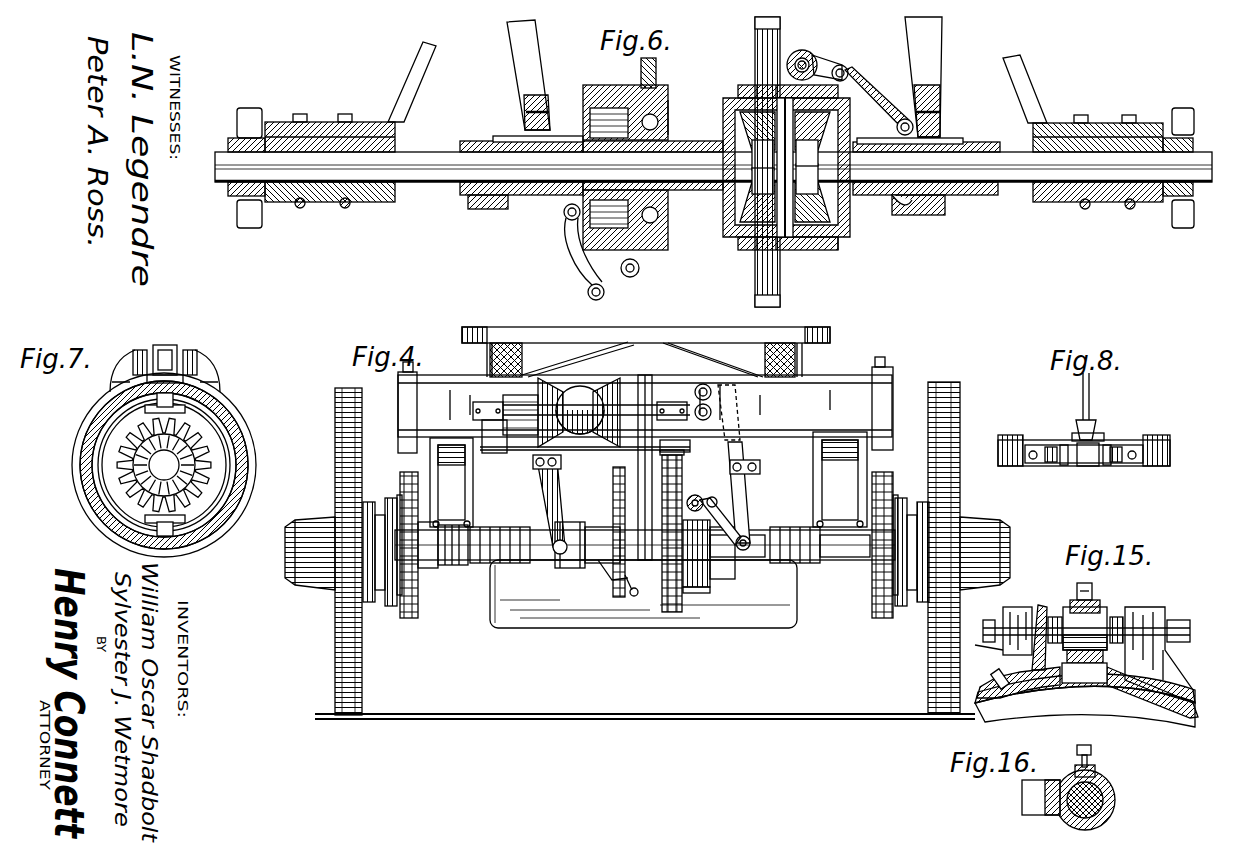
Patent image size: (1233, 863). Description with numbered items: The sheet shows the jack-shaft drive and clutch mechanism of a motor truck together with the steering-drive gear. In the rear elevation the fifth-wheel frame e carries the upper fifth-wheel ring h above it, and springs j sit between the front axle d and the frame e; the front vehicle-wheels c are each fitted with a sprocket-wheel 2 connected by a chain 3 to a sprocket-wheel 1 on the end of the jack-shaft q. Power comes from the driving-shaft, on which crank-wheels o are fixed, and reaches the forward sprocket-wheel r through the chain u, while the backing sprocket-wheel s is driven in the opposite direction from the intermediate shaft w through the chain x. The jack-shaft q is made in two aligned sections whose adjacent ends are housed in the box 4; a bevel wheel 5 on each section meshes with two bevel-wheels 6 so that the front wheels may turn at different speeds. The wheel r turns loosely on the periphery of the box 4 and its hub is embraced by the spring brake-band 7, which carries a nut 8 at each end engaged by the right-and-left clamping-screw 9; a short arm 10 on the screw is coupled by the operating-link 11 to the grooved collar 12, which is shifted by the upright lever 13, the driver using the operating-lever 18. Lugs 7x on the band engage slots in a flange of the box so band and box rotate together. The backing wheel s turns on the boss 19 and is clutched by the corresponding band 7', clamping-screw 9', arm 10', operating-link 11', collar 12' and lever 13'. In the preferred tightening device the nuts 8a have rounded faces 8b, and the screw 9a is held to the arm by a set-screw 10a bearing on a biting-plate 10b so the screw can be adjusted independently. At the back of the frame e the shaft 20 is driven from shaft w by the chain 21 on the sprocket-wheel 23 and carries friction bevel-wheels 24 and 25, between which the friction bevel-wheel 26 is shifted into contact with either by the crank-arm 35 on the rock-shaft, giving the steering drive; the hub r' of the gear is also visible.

In FIG. 6, the sprocket-wheel 1 is at (247, 108).
In FIG. 4, the sprocket-wheel 2 is at (398, 500).
In FIG. 4, the chain 3 is at (408, 476).
In FIG. 6, the box 4 is at (730, 133).
In FIG. 7, the box 4 is at (238, 440).
In FIG. 4, the box 4 is at (705, 566).
In FIG. 6, the miter or bevel wheel 5 is at (785, 167).
In FIG. 7, the miter or bevel wheel 5 is at (120, 460).
In FIG. 6, the bevel-wheel 6 is at (785, 167).
In FIG. 7, the bevel-wheel 6 is at (205, 412).
In FIG. 6, the spring brake-band 7 is at (778, 170).
In FIG. 7, the spring brake-band 7 is at (164, 465).
In FIG. 4, the spring brake-band 7 is at (696, 598).
In FIG. 15, the spring brake-band 7 is at (1096, 692).
In FIG. 6, the band 7' is at (653, 153).
In FIG. 6, the lug 7x is at (840, 249).
In FIG. 8, the lug 7x is at (1012, 437).
In FIG. 6, the nut 8 is at (808, 58).
In FIG. 7, the nut 8 is at (144, 352).
In FIG. 4, the nut 8 is at (695, 497).
In FIG. 8, the nut 8 is at (1052, 466).
In FIG. 15, the nut 8a is at (1018, 607).
In FIG. 15, the rounded face 8b is at (1045, 606).
In FIG. 6, the right-and-left clamping-screw 9 is at (830, 58).
In FIG. 7, the right-and-left clamping-screw 9 is at (168, 352).
In FIG. 4, the right-and-left clamping-screw 9 is at (713, 495).
In FIG. 8, the right-and-left clamping-screw 9 is at (1085, 472).
In FIG. 6, the clamping-screw 9' is at (642, 278).
In FIG. 15, the clamping-screw 9a is at (1115, 615).
In FIG. 16, the clamping-screw 9a is at (1118, 795).
In FIG. 6, the short arm 10 is at (856, 62).
In FIG. 8, the short arm 10 is at (1098, 443).
In FIG. 15, the short arm 10 is at (1084, 667).
In FIG. 16, the short arm 10 is at (1039, 809).
In FIG. 6, the arm 10' is at (610, 295).
In FIG. 15, the set-screw 10a is at (1085, 583).
In FIG. 16, the set-screw 10a is at (1078, 755).
In FIG. 16, the biting-plate 10b is at (1106, 778).
In FIG. 6, the operating-link 11 is at (879, 101).
In FIG. 4, the operating-link 11 is at (738, 524).
In FIG. 8, the operating-link 11 is at (1094, 406).
In FIG. 6, the operating-link 11' is at (568, 244).
In FIG. 6, the circumferentially-grooved collar 12 is at (926, 187).
In FIG. 4, the circumferentially-grooved collar 12 is at (734, 557).
In FIG. 6, the splined collar 12' is at (521, 185).
In FIG. 6, the upright lever 13 is at (725, 77).
In FIG. 4, the upright lever 13 is at (749, 492).
In FIG. 4, the upright lever 13' is at (538, 504).
In FIG. 15, the operating-lever 18 is at (1085, 625).
In FIG. 6, the boss 19 is at (669, 115).
In FIG. 4, the shaft 20 is at (598, 403).
In FIG. 4, the chain 21 is at (670, 440).
In FIG. 4, the sprocket-wheel 23 is at (637, 467).
In FIG. 4, the friction bevel-wheel 24 is at (560, 385).
In FIG. 4, the friction bevel-wheel 25 is at (606, 412).
In FIG. 4, the friction bevel-wheel 26 is at (580, 405).
In FIG. 4, the crank-arm 35 is at (720, 400).
In FIG. 6, the sprocket-wheel s is at (657, 92).
In FIG. 6, the jack-shaft q is at (438, 185).
In FIG. 7, the jack-shaft q is at (164, 465).
In FIG. 4, the jack-shaft q is at (512, 552).
In FIG. 6, the sprocket-wheel r is at (774, 162).
In FIG. 7, the sprocket-wheel r is at (181, 465).
In FIG. 4, the sprocket-wheel r is at (679, 533).
In FIG. 15, the sprocket-wheel r is at (1085, 707).
In FIG. 4, the gear hub r' is at (602, 544).
In FIG. 4, the upper fifth-wheel ring h is at (690, 328).
In FIG. 4, the fifth-wheel frame e is at (645, 405).
In FIG. 4, the spring j is at (462, 505).
In FIG. 4, the crank-wheel o is at (555, 532).
In FIG. 4, the intermediate shaft w is at (610, 532).
In FIG. 4, the chain x is at (636, 591).
In FIG. 4, the front axle d is at (614, 620).
In FIG. 4, the chain u is at (672, 612).
In FIG. 4, the front vehicle-wheel c is at (362, 650).
In FIG. 15, the front vehicle-wheel c is at (982, 642).